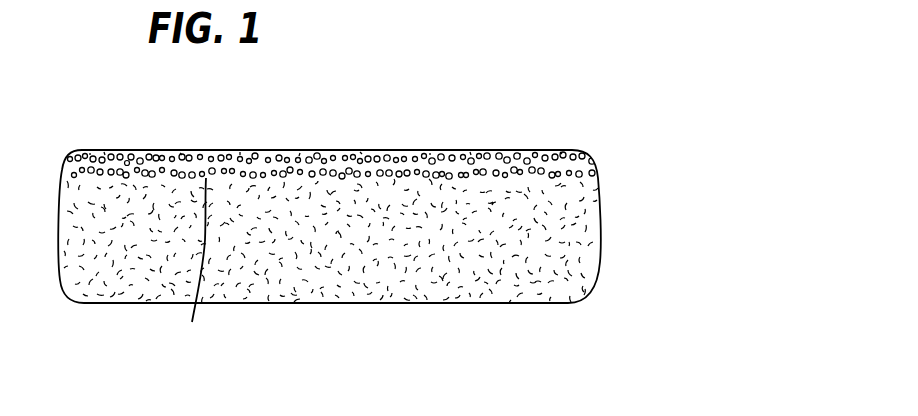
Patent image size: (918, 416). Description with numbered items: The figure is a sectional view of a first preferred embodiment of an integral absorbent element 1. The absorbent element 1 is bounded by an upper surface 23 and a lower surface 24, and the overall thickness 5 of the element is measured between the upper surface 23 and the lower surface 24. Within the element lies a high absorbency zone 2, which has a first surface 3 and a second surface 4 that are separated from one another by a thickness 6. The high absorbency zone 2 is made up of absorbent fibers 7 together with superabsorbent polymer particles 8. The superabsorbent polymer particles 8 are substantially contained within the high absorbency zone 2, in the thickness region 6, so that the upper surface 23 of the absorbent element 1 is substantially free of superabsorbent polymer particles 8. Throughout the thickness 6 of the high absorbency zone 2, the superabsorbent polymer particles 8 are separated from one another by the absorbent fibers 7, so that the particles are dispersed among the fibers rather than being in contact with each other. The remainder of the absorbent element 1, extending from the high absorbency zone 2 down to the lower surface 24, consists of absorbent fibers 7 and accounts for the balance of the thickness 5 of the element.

The absorbent element 1 is at (596, 79).
The high absorbency zone 2 is at (73, 88).
The first surface 3 is at (127, 161).
The second surface 4 is at (193, 261).
The thickness 5 is at (640, 150).
The thickness 6 is at (57, 153).
The absorbent fibers 7 is at (221, 178).
The superabsorbent polymer particles 8 is at (457, 160).
The upper surface 23 is at (352, 150).
The lower surface 24 is at (512, 305).